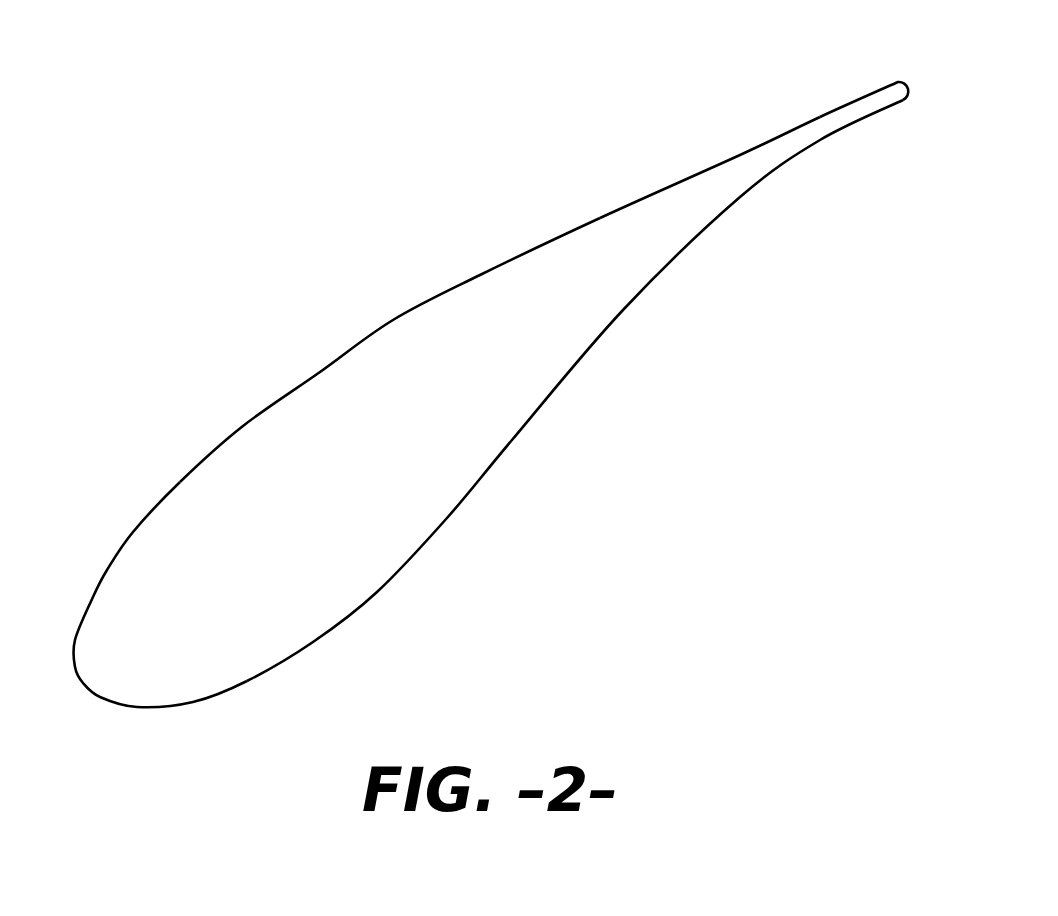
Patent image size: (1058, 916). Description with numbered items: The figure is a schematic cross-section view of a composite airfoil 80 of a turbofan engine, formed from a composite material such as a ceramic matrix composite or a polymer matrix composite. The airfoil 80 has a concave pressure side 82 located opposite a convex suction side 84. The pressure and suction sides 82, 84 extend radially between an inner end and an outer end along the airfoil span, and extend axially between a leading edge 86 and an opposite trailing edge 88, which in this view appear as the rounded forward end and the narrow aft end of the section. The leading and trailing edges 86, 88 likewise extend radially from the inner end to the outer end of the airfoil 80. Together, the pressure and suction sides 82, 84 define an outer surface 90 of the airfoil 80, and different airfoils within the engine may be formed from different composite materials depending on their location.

The composite airfoil 80 is at (499, 387).
The concave pressure side 82 is at (512, 440).
The convex suction side 84 is at (475, 278).
The leading edge 86 is at (79, 689).
The trailing edge 88 is at (914, 79).
The outer surface 90 is at (674, 180).